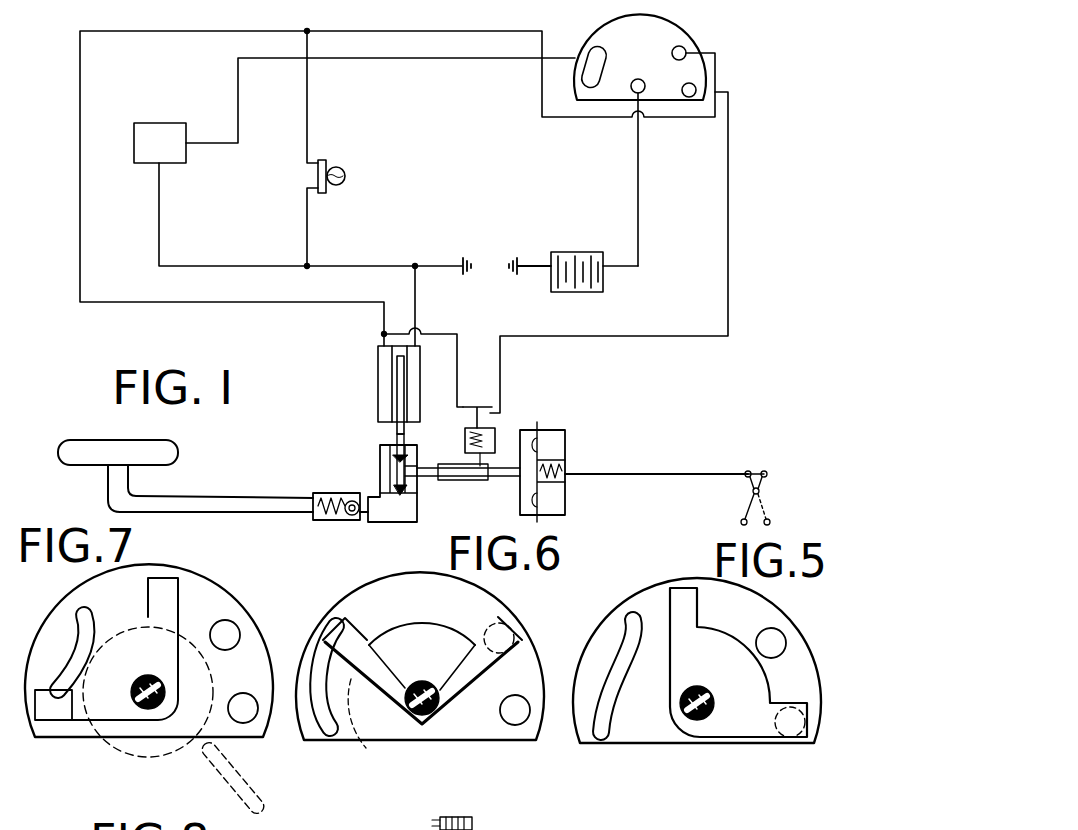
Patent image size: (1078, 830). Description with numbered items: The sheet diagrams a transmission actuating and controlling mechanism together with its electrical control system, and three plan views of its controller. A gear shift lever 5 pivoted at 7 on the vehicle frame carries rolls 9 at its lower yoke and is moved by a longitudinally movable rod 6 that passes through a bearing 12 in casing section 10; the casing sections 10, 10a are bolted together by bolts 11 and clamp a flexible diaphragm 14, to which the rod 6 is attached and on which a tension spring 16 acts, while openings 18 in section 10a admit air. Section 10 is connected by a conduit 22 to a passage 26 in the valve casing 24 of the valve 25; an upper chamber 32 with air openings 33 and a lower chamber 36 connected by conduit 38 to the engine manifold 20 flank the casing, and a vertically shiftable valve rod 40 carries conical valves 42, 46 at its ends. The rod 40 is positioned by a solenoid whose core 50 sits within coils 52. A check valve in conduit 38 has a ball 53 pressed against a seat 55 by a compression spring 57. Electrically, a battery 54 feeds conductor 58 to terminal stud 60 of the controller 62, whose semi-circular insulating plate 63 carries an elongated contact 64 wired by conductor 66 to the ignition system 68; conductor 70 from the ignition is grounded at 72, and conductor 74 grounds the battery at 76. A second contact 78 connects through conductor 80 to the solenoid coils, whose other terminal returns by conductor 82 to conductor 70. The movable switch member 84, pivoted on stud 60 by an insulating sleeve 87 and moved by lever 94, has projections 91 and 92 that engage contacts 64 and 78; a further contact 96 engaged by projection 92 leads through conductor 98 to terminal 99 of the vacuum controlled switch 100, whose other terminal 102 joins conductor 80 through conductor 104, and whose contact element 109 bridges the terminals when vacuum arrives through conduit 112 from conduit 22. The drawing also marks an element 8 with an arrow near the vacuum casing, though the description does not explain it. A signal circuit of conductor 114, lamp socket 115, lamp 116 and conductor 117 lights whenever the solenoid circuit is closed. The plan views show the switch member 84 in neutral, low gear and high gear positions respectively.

In FIG. 1, the gear shift lever 5 is at (768, 474).
In FIG. 1, the longitudinally movable rod 6 is at (600, 474).
In FIG. 1, the pivot 7 is at (762, 492).
In FIG. 1, the control unit 8 is at (586, 439).
In FIG. 8, the control unit 8 is at (501, 819).
In FIG. 1, the rolls 9 is at (740, 522).
In FIG. 1, the casing section 10 is at (520, 500).
In FIG. 1, the casing section 10a is at (566, 500).
In FIG. 8, the bolts 11 is at (466, 817).
In FIG. 1, the bearing 12 is at (580, 470).
In FIG. 1, the flexible diaphragm 14 is at (566, 458).
In FIG. 1, the tension spring 16 is at (566, 483).
In FIG. 1, the openings 18 is at (572, 440).
In FIG. 1, the manifold 20 is at (150, 443).
In FIG. 1, the conduit 22 is at (460, 482).
In FIG. 1, the valve casing 24 is at (390, 470).
In FIG. 1, the valve 25 is at (372, 442).
In FIG. 1, the passage 26 is at (418, 467).
In FIG. 1, the chamber 32 is at (417, 447).
In FIG. 1, the openings 33 is at (375, 447).
In FIG. 1, the chamber 36 is at (405, 523).
In FIG. 1, the conduit 38 is at (205, 497).
In FIG. 1, the valve rod 40 is at (404, 490).
In FIG. 1, the conical valve 42 is at (388, 448).
In FIG. 1, the conical valve 46 is at (412, 510).
In FIG. 1, the solenoid core 50 is at (399, 395).
In FIG. 1, the solenoid coils 52 is at (378, 358).
In FIG. 1, the ball 53 is at (330, 521).
In FIG. 1, the battery 54 is at (592, 292).
In FIG. 1, the valve seat 55 is at (355, 501).
In FIG. 1, the compression spring 57 is at (313, 500).
In FIG. 1, the conductor 58 is at (637, 188).
In FIG. 1, the terminal stud 60 is at (634, 93).
In FIG. 7, the terminal stud 60 is at (148, 708).
In FIG. 6, the terminal stud 60 is at (412, 708).
In FIG. 5, the terminal stud 60 is at (690, 720).
In FIG. 1, the controller 62 is at (659, 77).
In FIG. 7, the controller 62 is at (149, 670).
In FIG. 6, the controller 62 is at (420, 677).
In FIG. 5, the controller 62 is at (697, 671).
In FIG. 1, the supporting plate 63 is at (647, 53).
In FIG. 7, the supporting plate 63 is at (82, 590).
In FIG. 6, the supporting plate 63 is at (346, 601).
In FIG. 5, the supporting plate 63 is at (652, 589).
In FIG. 1, the contact 64 is at (590, 47).
In FIG. 7, the contact 64 is at (56, 634).
In FIG. 6, the contact 64 is at (338, 712).
In FIG. 5, the contact 64 is at (610, 636).
In FIG. 1, the conductor 66 is at (404, 58).
In FIG. 1, the ignition system 68 is at (155, 124).
In FIG. 1, the conductor 70 is at (161, 212).
In FIG. 1, the ground 72 is at (466, 258).
In FIG. 1, the conductor 74 is at (552, 260).
In FIG. 1, the ground 76 is at (512, 272).
In FIG. 1, the contact 78 is at (687, 53).
In FIG. 7, the contact 78 is at (232, 632).
In FIG. 6, the contact 78 is at (514, 635).
In FIG. 5, the contact 78 is at (775, 634).
In FIG. 1, the conductor 80 is at (463, 31).
In FIG. 1, the conductor 82 is at (417, 288).
In FIG. 7, the movable switch member 84 is at (128, 642).
In FIG. 6, the movable switch member 84 is at (430, 636).
In FIG. 5, the movable switch member 84 is at (722, 650).
In FIG. 7, the sleeve 87 is at (163, 706).
In FIG. 6, the sleeve 87 is at (433, 712).
In FIG. 5, the sleeve 87 is at (687, 718).
In FIG. 7, the projection 91 is at (55, 722).
In FIG. 6, the projection 91 is at (356, 622).
In FIG. 5, the projection 91 is at (692, 604).
In FIG. 7, the projection 92 is at (172, 590).
In FIG. 6, the projection 92 is at (512, 622).
In FIG. 5, the projection 92 is at (773, 730).
In FIG. 7, the lever 94 is at (258, 790).
In FIG. 1, the contact 96 is at (689, 97).
In FIG. 7, the contact 96 is at (243, 723).
In FIG. 6, the contact 96 is at (512, 725).
In FIG. 5, the contact 96 is at (790, 738).
In FIG. 1, the conductor 98 is at (729, 225).
In FIG. 1, the terminal 99 is at (502, 415).
In FIG. 1, the vacuum controlled switch 100 is at (526, 428).
In FIG. 1, the terminal 102 is at (462, 410).
In FIG. 1, the conductor 104 is at (459, 356).
In FIG. 1, the contact element 109 is at (479, 406).
In FIG. 1, the conduit 112 is at (466, 452).
In FIG. 1, the conductor 114 is at (308, 132).
In FIG. 1, the lamp socket 115 is at (326, 160).
In FIG. 1, the lamp 116 is at (346, 176).
In FIG. 1, the conductor 117 is at (308, 231).